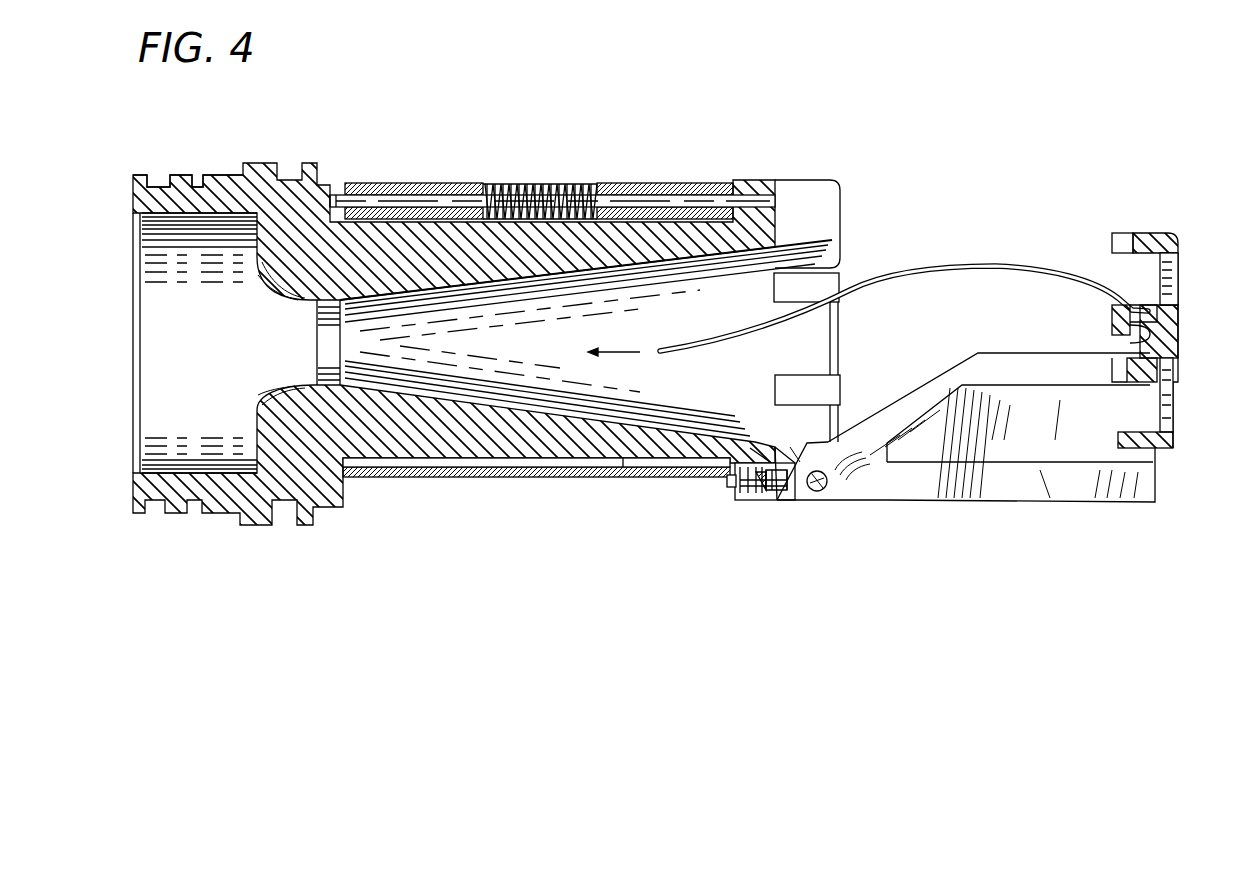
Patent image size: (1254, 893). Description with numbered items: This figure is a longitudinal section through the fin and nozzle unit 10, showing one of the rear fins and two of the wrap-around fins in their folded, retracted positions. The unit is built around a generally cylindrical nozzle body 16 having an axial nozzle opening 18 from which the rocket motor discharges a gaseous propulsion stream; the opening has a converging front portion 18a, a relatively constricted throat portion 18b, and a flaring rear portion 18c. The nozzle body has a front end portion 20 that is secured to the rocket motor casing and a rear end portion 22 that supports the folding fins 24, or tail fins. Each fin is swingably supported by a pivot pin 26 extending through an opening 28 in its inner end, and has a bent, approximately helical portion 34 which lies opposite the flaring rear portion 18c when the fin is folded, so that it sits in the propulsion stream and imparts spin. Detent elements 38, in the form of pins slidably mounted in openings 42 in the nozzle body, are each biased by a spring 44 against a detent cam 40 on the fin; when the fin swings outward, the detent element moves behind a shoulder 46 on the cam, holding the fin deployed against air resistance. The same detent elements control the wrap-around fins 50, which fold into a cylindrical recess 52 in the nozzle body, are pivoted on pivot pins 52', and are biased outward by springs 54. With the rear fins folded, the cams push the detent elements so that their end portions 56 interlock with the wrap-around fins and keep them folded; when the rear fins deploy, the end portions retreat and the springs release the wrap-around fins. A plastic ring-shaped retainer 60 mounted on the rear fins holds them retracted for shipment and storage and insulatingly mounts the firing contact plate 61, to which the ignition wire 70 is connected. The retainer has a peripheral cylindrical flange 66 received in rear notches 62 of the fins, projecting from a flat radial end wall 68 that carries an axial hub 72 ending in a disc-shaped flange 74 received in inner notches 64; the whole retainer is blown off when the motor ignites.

The fin and nozzle unit 10 is at (875, 137).
The nozzle body 16 is at (262, 172).
The nozzle opening 18 is at (790, 345).
The converging front portion 18a is at (265, 393).
The throat portion 18b is at (330, 380).
The flaring rear portion 18c is at (835, 242).
The front end portion 20 is at (181, 175).
The rear end portion 22 is at (770, 172).
The folding fins 24 is at (977, 508).
The pivot pins 26 is at (820, 492).
The openings 28 is at (827, 489).
The bent portions 34 is at (1055, 440).
The detent elements 38 is at (776, 455).
The detent cams 40 is at (786, 462).
The openings 42 is at (765, 500).
The spring 44 is at (760, 450).
The shoulder 46 is at (790, 480).
The wrap-around fins 50 is at (657, 185).
The cylindrical recess 52 is at (552, 311).
The pivot pins 52' is at (362, 177).
The springs 54 is at (568, 188).
The end portions 56 is at (728, 480).
The retainer 60 is at (1182, 232).
The firing contact plate 61 is at (1180, 345).
The notches 62 is at (1122, 450).
The notches 64 is at (1180, 398).
The flange 66 is at (1110, 243).
The end wall 68 is at (1180, 303).
The ignition wire 70 is at (1000, 266).
The hub 72 is at (1180, 375).
The flange 74 is at (1110, 301).